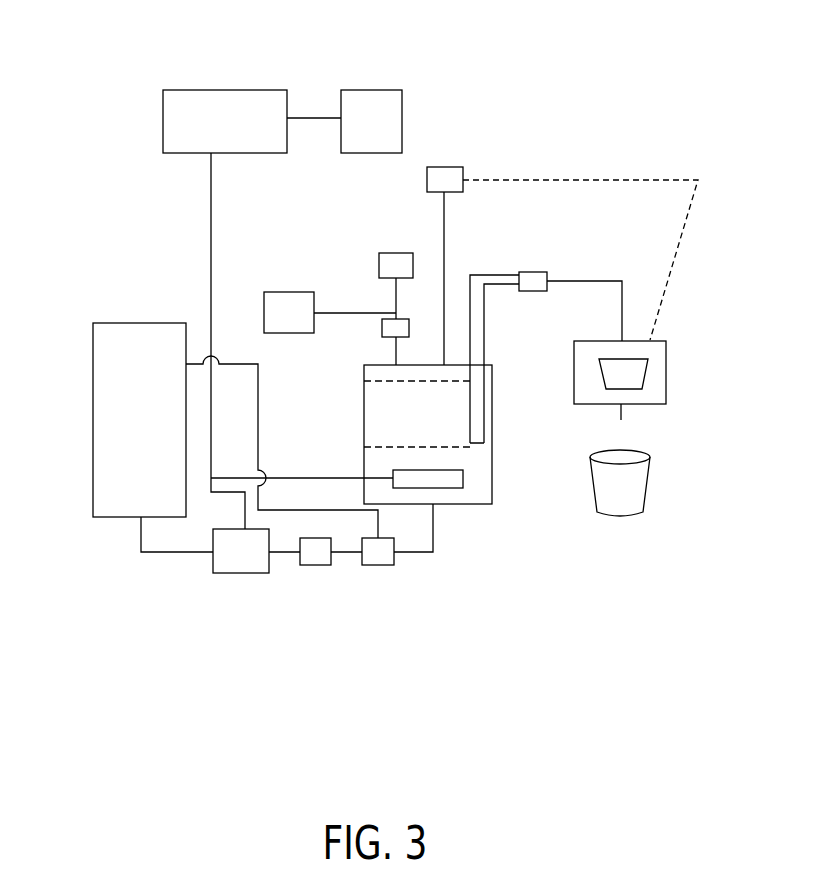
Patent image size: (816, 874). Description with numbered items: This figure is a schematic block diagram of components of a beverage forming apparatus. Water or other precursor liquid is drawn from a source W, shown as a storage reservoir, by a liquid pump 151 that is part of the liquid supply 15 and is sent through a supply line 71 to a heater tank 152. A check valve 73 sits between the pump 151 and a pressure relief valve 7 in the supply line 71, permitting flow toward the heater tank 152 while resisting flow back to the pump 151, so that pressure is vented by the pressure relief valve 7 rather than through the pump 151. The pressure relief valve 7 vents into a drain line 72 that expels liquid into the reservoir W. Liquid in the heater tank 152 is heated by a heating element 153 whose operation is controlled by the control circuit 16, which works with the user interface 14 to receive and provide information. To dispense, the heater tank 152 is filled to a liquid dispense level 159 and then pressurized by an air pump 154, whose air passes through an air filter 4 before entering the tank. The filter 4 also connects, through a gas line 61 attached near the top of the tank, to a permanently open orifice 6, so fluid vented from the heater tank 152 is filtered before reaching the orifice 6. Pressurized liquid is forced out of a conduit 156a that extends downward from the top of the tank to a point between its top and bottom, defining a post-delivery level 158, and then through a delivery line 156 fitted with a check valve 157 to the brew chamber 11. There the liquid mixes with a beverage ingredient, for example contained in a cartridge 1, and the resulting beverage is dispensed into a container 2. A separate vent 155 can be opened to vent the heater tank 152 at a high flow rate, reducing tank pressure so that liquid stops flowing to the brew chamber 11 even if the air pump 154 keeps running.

The cartridge 1 is at (645, 381).
The container 2 is at (650, 492).
The air filter 4 is at (403, 319).
The permanently open orifice 6 is at (394, 253).
The pressure relief valve 7 is at (378, 566).
The brew chamber 11 is at (666, 352).
The user interface 14 is at (402, 108).
The liquid supply 15 is at (242, 606).
The control circuit 16 is at (230, 89).
The gas line 61 is at (395, 340).
The supply line 71 is at (421, 553).
The drain line 72 is at (335, 511).
The check valve 73 is at (316, 566).
The liquid pump 151 is at (228, 574).
The heater tank 152 is at (492, 503).
The heating element 153 is at (443, 488).
The air pump 154 is at (290, 292).
The vent 155 is at (452, 167).
The delivery line 156 is at (578, 280).
The conduit 156a is at (474, 412).
The check valve 157 is at (527, 272).
The post-delivery level 158 is at (362, 447).
The liquid dispense level 159 is at (362, 381).
The source W is at (92, 406).